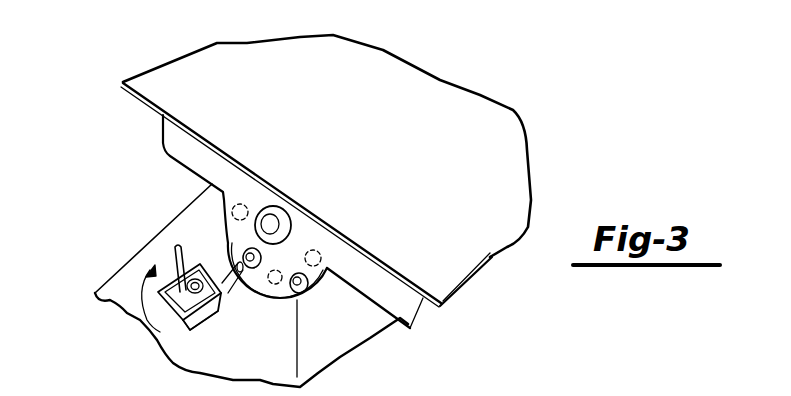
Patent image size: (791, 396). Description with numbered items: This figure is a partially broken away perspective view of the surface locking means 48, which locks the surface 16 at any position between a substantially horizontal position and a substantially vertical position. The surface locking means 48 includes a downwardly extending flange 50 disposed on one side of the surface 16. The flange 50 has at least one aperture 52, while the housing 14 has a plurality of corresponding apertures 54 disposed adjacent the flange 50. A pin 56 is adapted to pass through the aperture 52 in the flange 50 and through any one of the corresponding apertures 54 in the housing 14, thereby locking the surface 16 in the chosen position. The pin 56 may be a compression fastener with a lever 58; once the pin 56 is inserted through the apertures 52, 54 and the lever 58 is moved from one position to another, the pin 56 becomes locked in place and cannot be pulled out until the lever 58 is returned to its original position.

The surface 16 is at (213, 42).
The housing 14 is at (193, 201).
The flange 50 is at (322, 288).
The lever 58 is at (95, 295).
The apertures 54 is at (250, 200).
The aperture 52 is at (256, 270).
The surface locking means 48 is at (151, 271).
The pin 56 is at (228, 267).